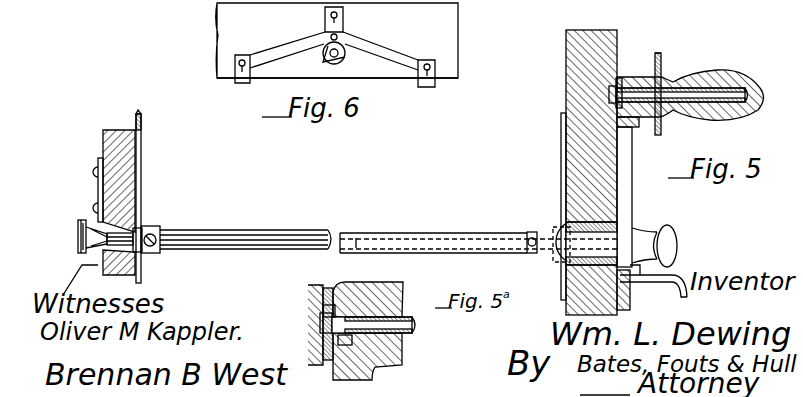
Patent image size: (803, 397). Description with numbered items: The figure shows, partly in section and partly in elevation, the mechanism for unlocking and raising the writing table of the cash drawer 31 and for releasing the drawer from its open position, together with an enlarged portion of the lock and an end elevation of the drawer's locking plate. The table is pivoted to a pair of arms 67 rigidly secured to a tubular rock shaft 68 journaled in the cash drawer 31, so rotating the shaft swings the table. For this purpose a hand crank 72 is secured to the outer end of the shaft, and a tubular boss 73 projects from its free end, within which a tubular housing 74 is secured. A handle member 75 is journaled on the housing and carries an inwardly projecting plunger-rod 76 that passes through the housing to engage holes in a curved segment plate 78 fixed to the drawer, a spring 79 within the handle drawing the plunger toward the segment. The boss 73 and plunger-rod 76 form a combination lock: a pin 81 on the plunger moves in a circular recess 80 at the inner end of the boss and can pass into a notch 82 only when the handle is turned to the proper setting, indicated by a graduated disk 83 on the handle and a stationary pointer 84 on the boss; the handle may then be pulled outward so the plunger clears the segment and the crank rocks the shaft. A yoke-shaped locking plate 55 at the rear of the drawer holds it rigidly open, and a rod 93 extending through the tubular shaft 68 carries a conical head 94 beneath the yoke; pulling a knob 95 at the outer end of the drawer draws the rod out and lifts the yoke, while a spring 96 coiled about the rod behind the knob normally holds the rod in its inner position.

In FIG. 6, the cash drawer 31 is at (440, 32).
In FIG. 5, the cash drawer 31 is at (573, 75).
In FIG. 6, the yoke-shaped locking plate 55 is at (363, 48).
In FIG. 5, the yoke-shaped locking plate 55 is at (98, 183).
In FIG. 5, the arms 67 is at (140, 168).
In FIG. 5, the tubular rock shaft 68 is at (213, 232).
In FIG. 5, the hand crank 72 is at (632, 148).
In FIG. 5, the tubular boss 73 is at (635, 78).
In FIG. 5A, the tubular boss 73 is at (365, 295).
In FIG. 5, the tubular housing 74 is at (672, 82).
In FIG. 5A, the tubular housing 74 is at (400, 298).
In FIG. 5, the handle member 75 is at (730, 73).
In FIG. 5, the plunger-rod 76 is at (695, 98).
In FIG. 5A, the plunger-rod 76 is at (308, 305).
In FIG. 5, the segment plate 78 is at (620, 98).
In FIG. 5A, the segment plate 78 is at (335, 342).
In FIG. 5, the spring 79 is at (718, 102).
In FIG. 5, the circular recess 80 is at (620, 85).
In FIG. 5A, the circular recess 80 is at (333, 288).
In FIG. 5, the pin 81 is at (630, 127).
In FIG. 5A, the pin 81 is at (372, 370).
In FIG. 5, the notch 82 is at (649, 122).
In FIG. 5A, the notch 82 is at (350, 337).
In FIG. 5, the graduated disk 83 is at (662, 63).
In FIG. 5, the stationary pointer 84 is at (660, 57).
In FIG. 6, the rod 93 is at (342, 50).
In FIG. 5, the rod 93 is at (360, 238).
In FIG. 6, the conical head 94 is at (323, 63).
In FIG. 5, the conical head 94 is at (77, 226).
In FIG. 5, the knob 95 is at (665, 238).
In FIG. 5, the spring 96 is at (565, 268).